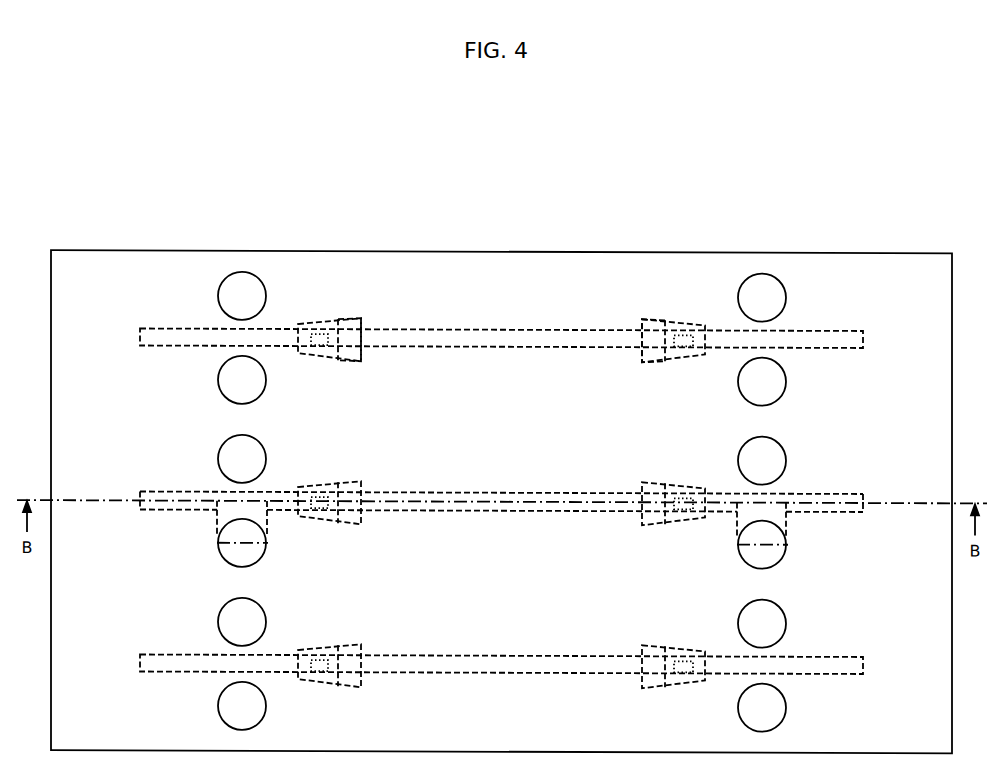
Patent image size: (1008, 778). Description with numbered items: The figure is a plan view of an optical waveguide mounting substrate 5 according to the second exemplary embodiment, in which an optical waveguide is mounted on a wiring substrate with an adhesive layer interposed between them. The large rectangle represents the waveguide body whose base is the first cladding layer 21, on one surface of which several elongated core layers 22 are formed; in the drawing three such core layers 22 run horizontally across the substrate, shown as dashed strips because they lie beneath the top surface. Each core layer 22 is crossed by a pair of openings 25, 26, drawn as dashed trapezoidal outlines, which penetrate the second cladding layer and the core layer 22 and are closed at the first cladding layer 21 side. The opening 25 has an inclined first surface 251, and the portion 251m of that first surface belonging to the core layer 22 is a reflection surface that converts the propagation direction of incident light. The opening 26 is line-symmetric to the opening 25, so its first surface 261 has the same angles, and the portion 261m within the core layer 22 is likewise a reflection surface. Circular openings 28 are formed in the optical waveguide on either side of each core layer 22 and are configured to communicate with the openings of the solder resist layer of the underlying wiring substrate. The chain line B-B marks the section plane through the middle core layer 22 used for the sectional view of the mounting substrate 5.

The optical waveguide mounting substrate 5 is at (529, 481).
The first cladding layer 21 is at (945, 357).
The core layer 22 is at (848, 333).
The opening 25 is at (343, 284).
The first surface 251 is at (358, 319).
The reflection surface 251m is at (323, 333).
The opening 26 is at (660, 285).
The first surface 261 is at (645, 318).
The reflection surface 261m is at (677, 333).
The opening 28 is at (265, 296).